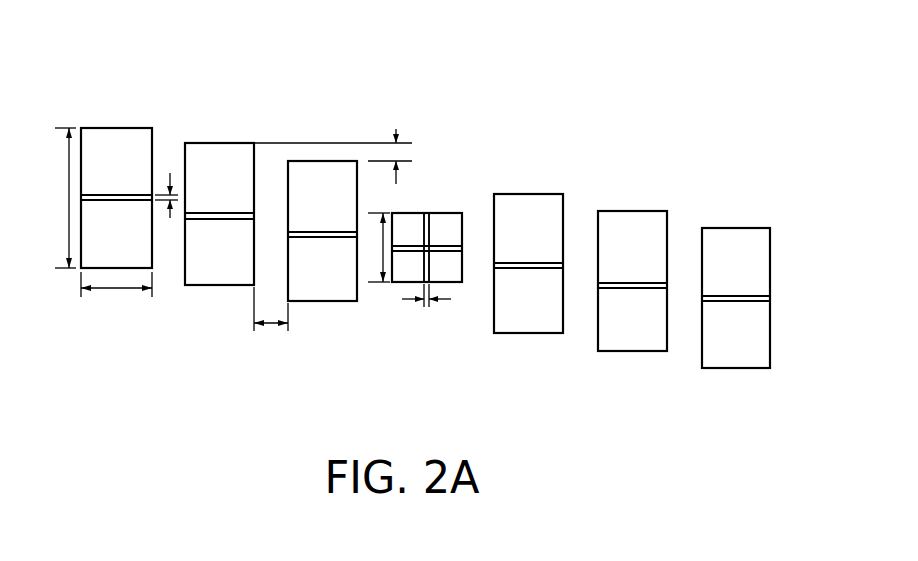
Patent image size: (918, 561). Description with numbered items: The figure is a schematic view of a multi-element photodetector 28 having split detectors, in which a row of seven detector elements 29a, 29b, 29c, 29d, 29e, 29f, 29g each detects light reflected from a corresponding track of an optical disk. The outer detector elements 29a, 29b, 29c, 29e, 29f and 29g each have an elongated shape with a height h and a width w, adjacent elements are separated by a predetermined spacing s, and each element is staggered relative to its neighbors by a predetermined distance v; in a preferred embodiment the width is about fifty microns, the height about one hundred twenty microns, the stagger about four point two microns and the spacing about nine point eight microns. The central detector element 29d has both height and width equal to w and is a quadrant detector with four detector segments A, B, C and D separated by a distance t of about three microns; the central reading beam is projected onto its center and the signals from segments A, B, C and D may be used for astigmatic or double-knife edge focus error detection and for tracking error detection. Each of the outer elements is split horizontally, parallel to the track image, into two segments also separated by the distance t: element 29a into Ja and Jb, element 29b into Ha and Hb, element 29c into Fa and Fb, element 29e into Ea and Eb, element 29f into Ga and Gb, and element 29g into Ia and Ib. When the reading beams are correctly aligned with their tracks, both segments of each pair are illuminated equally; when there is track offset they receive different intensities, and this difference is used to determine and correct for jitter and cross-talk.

The multi-element photodetector 28 is at (690, 117).
The detector element 29a is at (112, 128).
The detector element 29b is at (215, 143).
The detector element 29c is at (317, 161).
The central detector element 29d is at (427, 209).
The detector element 29e is at (527, 194).
The detector element 29f is at (633, 211).
The detector element 29g is at (738, 228).
The detector segment A is at (409, 230).
The detector segment B is at (445, 230).
The detector segment C is at (445, 265).
The detector segment D is at (409, 265).